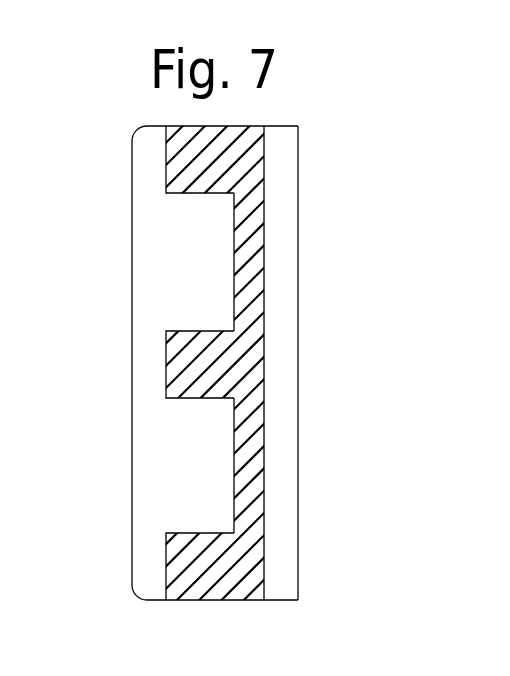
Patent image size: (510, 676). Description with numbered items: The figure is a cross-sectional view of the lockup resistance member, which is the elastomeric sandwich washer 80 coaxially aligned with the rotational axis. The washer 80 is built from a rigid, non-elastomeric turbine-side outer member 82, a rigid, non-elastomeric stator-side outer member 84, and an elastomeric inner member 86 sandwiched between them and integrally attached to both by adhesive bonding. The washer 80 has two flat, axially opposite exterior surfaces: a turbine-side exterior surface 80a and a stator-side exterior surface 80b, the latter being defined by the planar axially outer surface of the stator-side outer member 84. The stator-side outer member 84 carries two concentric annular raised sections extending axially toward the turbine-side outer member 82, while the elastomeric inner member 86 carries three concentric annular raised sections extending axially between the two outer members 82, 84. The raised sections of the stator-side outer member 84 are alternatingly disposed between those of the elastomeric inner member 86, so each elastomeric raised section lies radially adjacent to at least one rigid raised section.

The elastomeric sandwich washer 80 is at (116, 463).
The turbine-side exterior surface 80a is at (298, 366).
The stator-side exterior surface 80b is at (132, 258).
The turbine-side outer member 82 is at (282, 204).
The stator-side outer member 84 is at (141, 338).
The elastomeric inner member 86 is at (232, 580).